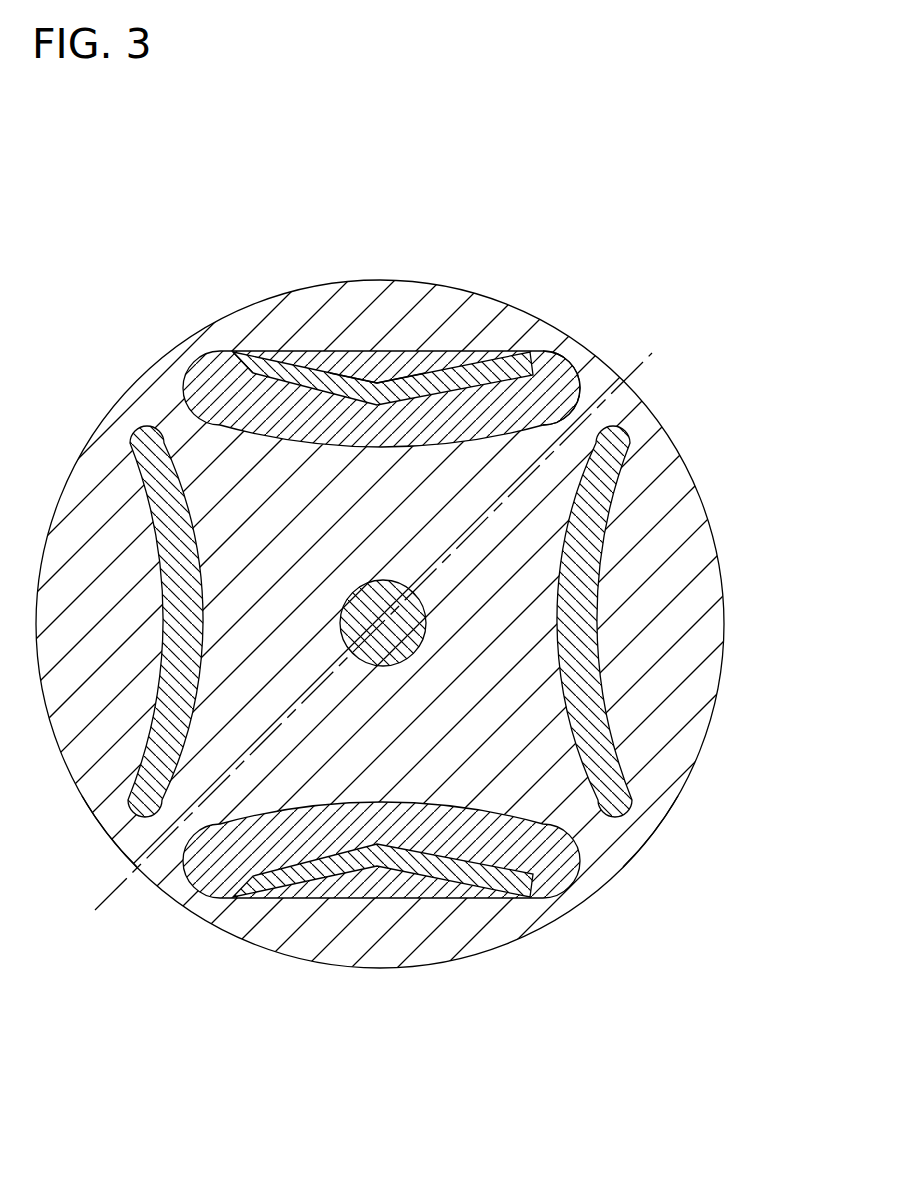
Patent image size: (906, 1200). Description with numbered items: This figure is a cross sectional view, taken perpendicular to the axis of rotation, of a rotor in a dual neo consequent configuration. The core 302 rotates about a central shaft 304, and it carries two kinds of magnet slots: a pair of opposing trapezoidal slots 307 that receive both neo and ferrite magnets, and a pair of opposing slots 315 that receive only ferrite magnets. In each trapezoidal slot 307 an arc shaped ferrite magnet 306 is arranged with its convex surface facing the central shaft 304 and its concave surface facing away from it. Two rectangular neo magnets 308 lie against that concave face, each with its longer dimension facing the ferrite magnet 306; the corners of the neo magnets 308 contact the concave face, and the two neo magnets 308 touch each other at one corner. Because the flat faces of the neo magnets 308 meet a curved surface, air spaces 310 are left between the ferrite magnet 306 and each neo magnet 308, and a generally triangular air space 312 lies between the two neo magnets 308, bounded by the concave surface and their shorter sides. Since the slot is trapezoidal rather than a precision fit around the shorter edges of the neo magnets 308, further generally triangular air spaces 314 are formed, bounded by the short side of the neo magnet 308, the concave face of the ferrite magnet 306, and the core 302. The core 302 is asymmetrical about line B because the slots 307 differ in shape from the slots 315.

The core 302 is at (600, 860).
The central shaft 304 is at (394, 643).
The arc shaped ferrite magnet 306 is at (577, 373).
The trapezoidal slot 307 is at (548, 358).
The rectangular neo magnet 308 is at (298, 365).
The air space 310 is at (190, 420).
The triangular air space 312 is at (375, 388).
The triangular air space 314 is at (250, 370).
The slot 315 is at (633, 790).
The line B is at (110, 897).